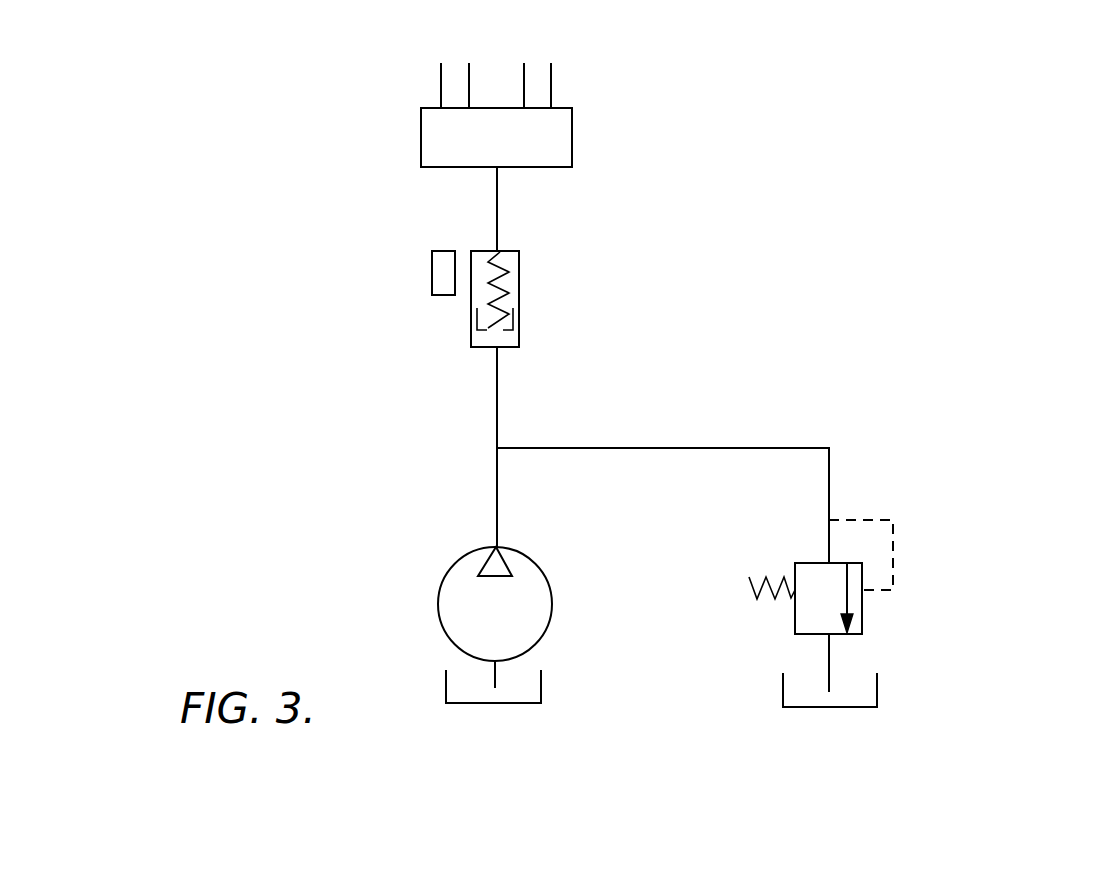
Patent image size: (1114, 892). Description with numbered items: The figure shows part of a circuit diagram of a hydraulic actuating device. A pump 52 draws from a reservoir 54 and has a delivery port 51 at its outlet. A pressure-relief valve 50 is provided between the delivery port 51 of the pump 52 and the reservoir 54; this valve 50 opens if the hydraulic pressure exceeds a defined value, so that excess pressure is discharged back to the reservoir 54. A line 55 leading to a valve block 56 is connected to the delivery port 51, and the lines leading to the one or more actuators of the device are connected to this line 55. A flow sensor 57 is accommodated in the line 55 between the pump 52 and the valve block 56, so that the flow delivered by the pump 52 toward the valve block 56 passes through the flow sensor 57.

The pressure-relief valve 50 is at (934, 590).
The delivery port 51 is at (494, 548).
The pump 52 is at (438, 608).
The reservoir 54 is at (508, 704).
The line 55 is at (712, 448).
The valve block 56 is at (560, 130).
The flow sensor 57 is at (548, 290).